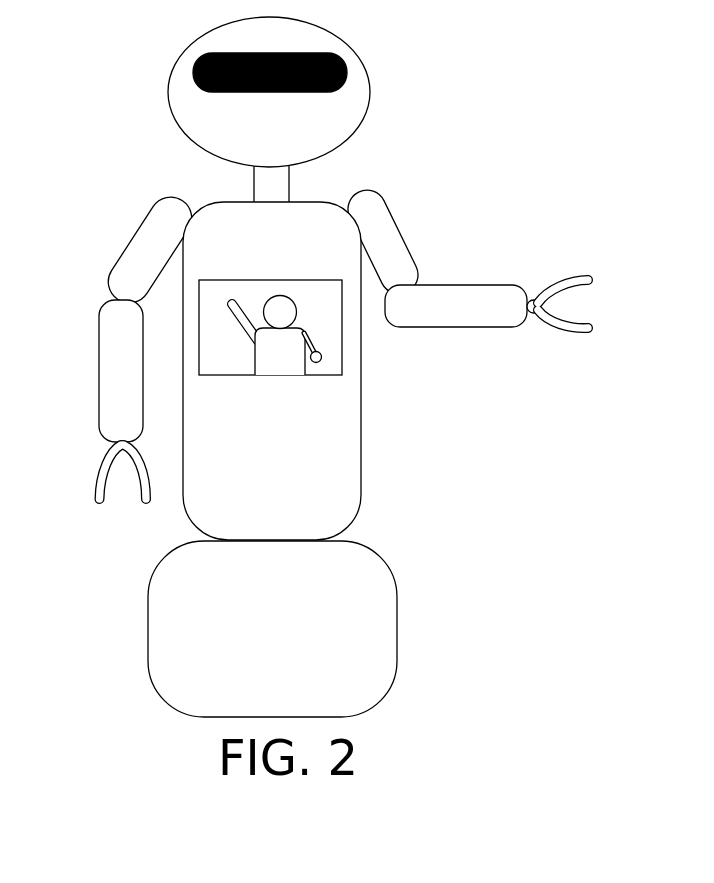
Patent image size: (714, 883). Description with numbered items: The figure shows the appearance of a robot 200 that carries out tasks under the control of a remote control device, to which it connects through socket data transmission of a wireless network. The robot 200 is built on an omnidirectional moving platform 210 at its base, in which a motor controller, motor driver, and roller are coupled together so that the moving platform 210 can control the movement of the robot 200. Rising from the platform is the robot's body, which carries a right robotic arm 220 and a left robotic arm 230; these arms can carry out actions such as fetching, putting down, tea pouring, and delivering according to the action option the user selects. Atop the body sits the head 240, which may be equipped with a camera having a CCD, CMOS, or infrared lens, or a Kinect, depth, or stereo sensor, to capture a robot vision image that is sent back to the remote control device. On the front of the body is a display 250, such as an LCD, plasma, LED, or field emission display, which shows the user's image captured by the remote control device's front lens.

The robot 200 is at (318, 367).
The omnidirectional moving platform 210 is at (388, 637).
The right robotic arm 220 is at (110, 361).
The left robotic arm 230 is at (393, 232).
The head 240 is at (176, 81).
The display 250 is at (342, 365).